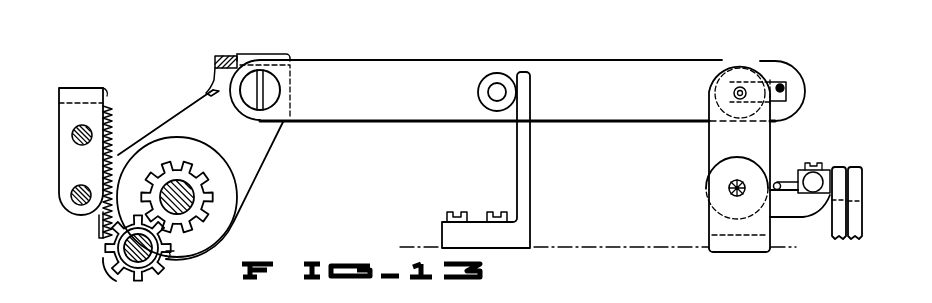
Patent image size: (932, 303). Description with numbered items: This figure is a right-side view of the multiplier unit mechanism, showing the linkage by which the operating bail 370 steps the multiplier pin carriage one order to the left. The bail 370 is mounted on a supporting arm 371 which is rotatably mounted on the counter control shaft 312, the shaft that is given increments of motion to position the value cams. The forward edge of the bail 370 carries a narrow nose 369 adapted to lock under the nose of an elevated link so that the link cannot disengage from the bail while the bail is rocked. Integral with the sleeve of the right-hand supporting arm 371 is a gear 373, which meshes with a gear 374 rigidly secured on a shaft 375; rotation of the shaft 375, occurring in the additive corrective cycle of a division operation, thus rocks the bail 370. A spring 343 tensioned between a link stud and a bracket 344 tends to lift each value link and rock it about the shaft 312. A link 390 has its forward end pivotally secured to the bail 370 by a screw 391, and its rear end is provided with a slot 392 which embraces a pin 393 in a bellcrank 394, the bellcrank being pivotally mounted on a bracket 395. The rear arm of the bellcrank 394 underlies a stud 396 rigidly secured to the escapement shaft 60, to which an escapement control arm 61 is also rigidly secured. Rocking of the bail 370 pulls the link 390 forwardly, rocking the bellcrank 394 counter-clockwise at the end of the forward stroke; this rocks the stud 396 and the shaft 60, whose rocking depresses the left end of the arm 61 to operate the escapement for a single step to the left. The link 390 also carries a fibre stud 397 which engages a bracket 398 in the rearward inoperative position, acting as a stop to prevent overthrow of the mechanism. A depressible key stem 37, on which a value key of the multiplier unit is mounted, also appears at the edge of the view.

The link 390 is at (517, 90).
The supporting arm 371 is at (257, 143).
The nose 369 is at (222, 56).
The operating bail 370 is at (250, 55).
The screw 391 is at (272, 90).
The fibre stud 397 is at (480, 93).
The bracket 398 is at (527, 177).
The bellcrank 394 is at (764, 142).
The pin 393 is at (740, 87).
The slot 392 is at (784, 88).
The bracket 395 is at (720, 222).
The stud 396 is at (813, 185).
The shaft 60 is at (789, 182).
The escapement control arm 61 is at (860, 199).
The bracket 344 is at (75, 90).
The spring 343 is at (113, 147).
The counter control shaft 312 is at (185, 198).
The gear 373 is at (200, 217).
The gear 374 is at (152, 276).
The shaft 375 is at (128, 250).
The key stem 37 is at (837, 293).